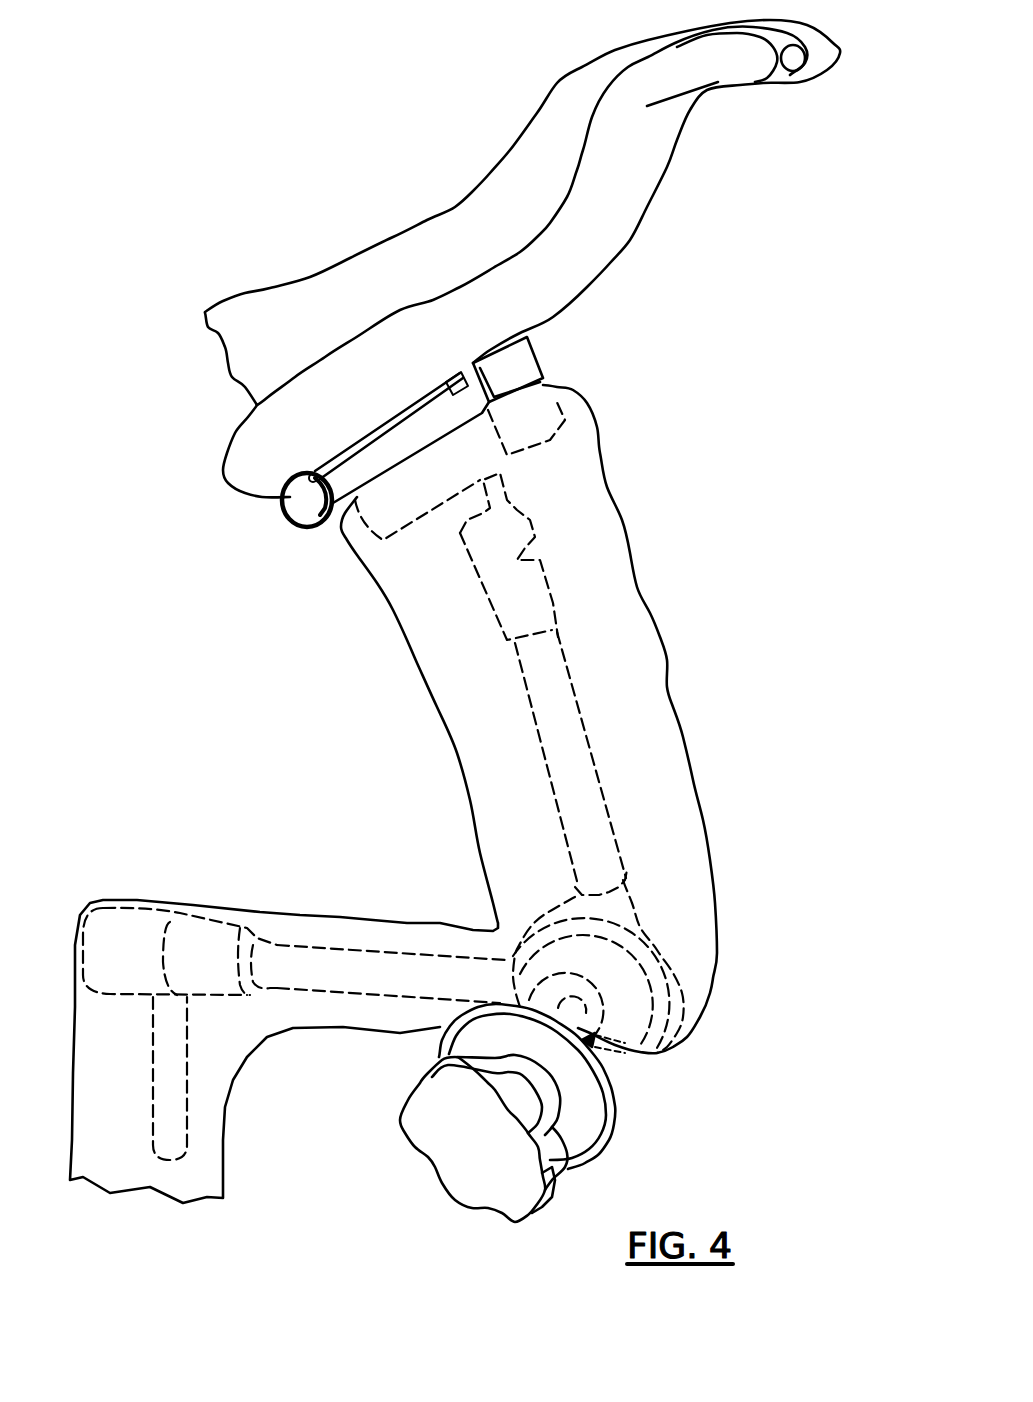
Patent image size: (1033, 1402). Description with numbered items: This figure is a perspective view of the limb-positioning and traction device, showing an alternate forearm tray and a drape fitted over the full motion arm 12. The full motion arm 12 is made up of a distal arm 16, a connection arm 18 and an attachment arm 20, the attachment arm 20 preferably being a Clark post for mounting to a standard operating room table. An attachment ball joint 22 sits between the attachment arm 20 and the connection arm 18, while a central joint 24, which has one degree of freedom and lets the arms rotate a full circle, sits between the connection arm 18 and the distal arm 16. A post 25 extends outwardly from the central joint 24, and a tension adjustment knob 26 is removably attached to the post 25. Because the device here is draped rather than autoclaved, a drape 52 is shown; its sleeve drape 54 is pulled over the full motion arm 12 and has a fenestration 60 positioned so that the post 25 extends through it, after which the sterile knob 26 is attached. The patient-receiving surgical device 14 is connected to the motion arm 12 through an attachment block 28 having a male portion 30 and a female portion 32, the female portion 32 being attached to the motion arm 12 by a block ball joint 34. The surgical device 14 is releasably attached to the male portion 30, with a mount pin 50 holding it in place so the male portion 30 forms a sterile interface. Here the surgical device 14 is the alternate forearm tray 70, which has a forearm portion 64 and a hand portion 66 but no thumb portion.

The full motion arm 12 is at (567, 797).
The patient-receiving surgical device 14 is at (720, 263).
The distal arm 16 is at (537, 685).
The connection arm 18 is at (353, 950).
The attachment arm 20 is at (263, 1122).
The attachment ball joint 22 is at (127, 923).
The central joint 24 is at (673, 985).
The post 25 is at (655, 1050).
The tension adjustment knob 26 is at (448, 1142).
The attachment block 28 is at (307, 573).
The male portion 30 is at (527, 361).
The female portion 32 is at (555, 421).
The block ball joint 34 is at (537, 578).
The mount pin 50 is at (283, 512).
The drape 52 is at (660, 710).
The sleeve drape 54 is at (637, 642).
The fenestration 60 is at (610, 1070).
The forearm portion 64 is at (370, 345).
The hand portion 66 is at (715, 146).
The alternate forearm tray 70 is at (700, 200).